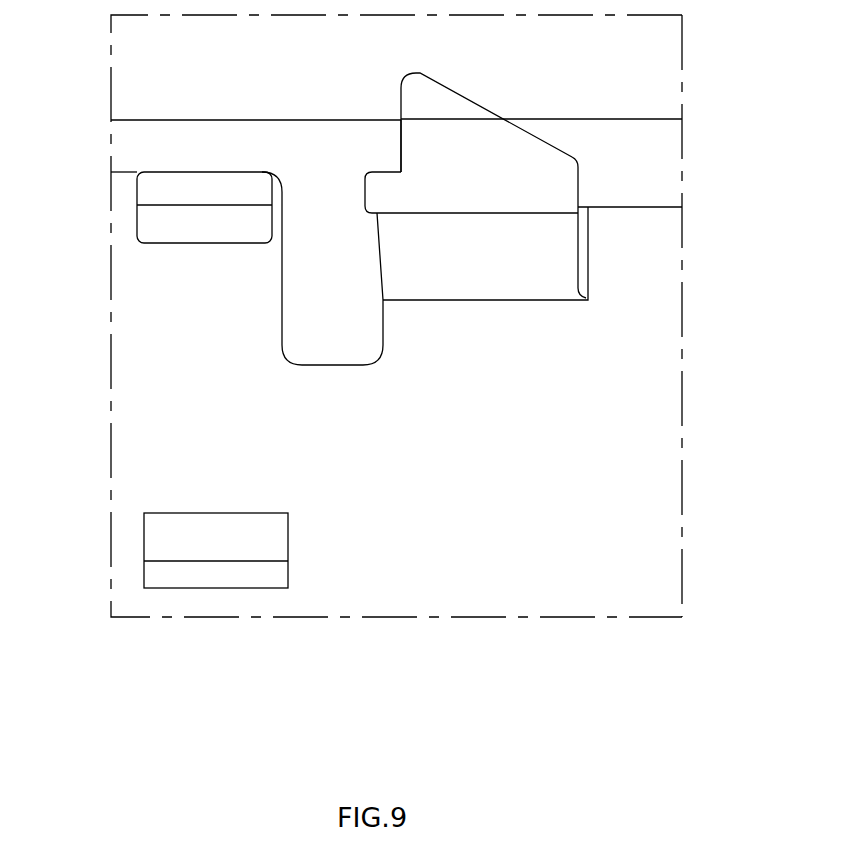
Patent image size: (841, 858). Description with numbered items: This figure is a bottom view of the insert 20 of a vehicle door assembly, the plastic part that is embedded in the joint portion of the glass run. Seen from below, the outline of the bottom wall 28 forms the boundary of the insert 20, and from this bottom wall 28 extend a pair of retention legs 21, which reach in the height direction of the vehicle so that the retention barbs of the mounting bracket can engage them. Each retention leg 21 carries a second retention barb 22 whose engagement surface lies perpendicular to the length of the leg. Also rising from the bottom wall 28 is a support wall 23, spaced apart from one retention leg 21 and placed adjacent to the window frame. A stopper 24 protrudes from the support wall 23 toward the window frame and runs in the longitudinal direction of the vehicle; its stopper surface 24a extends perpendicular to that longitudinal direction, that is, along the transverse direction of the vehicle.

The insert 20 is at (92, 322).
The retention leg 21 is at (172, 170).
The second retention barb 22 is at (198, 245).
The support wall 23 is at (548, 213).
The stopper 24 is at (447, 107).
The stopper surface 24a is at (398, 93).
The bottom wall 28 is at (667, 393).